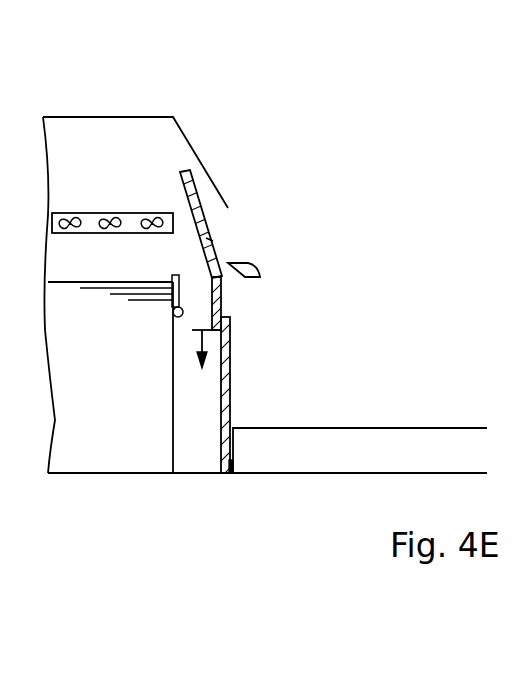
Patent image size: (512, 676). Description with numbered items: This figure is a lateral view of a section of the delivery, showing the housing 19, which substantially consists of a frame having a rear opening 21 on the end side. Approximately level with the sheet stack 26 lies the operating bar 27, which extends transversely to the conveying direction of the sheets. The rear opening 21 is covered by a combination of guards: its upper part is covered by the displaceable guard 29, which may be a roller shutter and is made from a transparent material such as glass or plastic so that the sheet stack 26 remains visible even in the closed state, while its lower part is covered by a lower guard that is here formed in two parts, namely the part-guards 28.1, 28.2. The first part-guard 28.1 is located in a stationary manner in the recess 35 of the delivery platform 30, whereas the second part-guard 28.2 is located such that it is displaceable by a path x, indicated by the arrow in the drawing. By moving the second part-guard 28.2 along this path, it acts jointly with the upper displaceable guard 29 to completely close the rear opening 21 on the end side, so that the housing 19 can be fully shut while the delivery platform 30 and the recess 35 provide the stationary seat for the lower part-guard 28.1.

The housing 19 is at (123, 117).
The rear opening 21 is at (228, 227).
The sheet stack 26 is at (121, 388).
The operating bar 27 is at (243, 275).
The part-guard 28.1 is at (228, 385).
The part-guard 28.2 is at (220, 297).
The displaceable guard 29 is at (213, 240).
The delivery platform 30 is at (438, 438).
The recess 35 is at (232, 474).